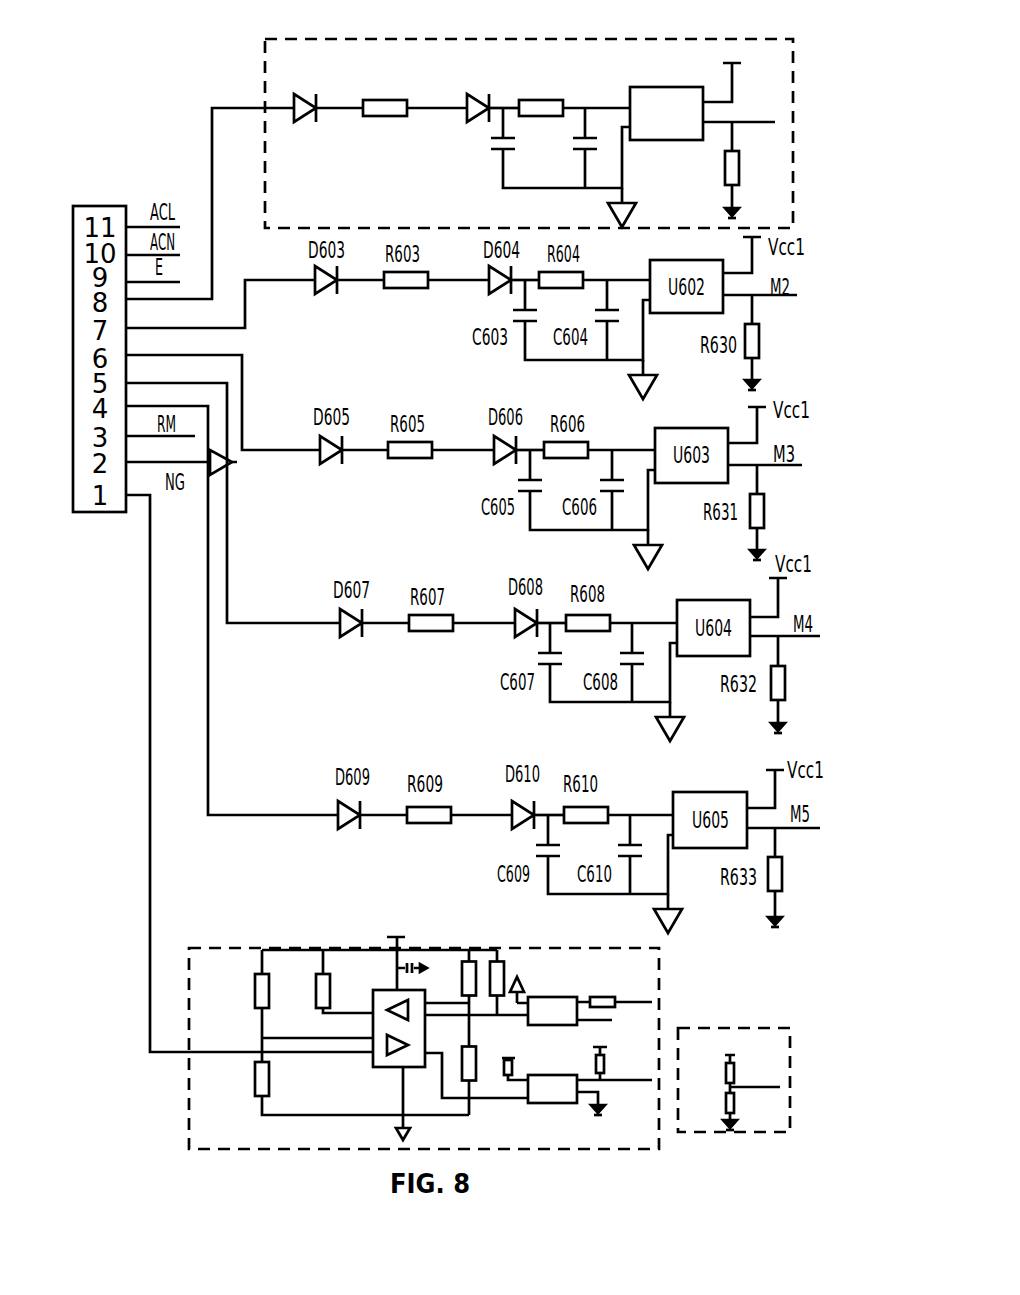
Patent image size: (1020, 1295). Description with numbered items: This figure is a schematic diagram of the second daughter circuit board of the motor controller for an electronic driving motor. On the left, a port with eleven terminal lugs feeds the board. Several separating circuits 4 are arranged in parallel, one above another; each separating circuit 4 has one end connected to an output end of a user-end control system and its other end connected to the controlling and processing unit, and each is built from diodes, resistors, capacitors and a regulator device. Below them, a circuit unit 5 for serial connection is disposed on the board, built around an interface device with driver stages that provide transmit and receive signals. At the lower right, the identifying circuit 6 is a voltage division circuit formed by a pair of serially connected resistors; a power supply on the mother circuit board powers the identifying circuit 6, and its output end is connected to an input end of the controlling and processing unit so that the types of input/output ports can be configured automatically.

The separating circuit 4 is at (317, 58).
The circuit unit for serial connection 5 is at (217, 1128).
The identifying circuit 6 is at (782, 1032).